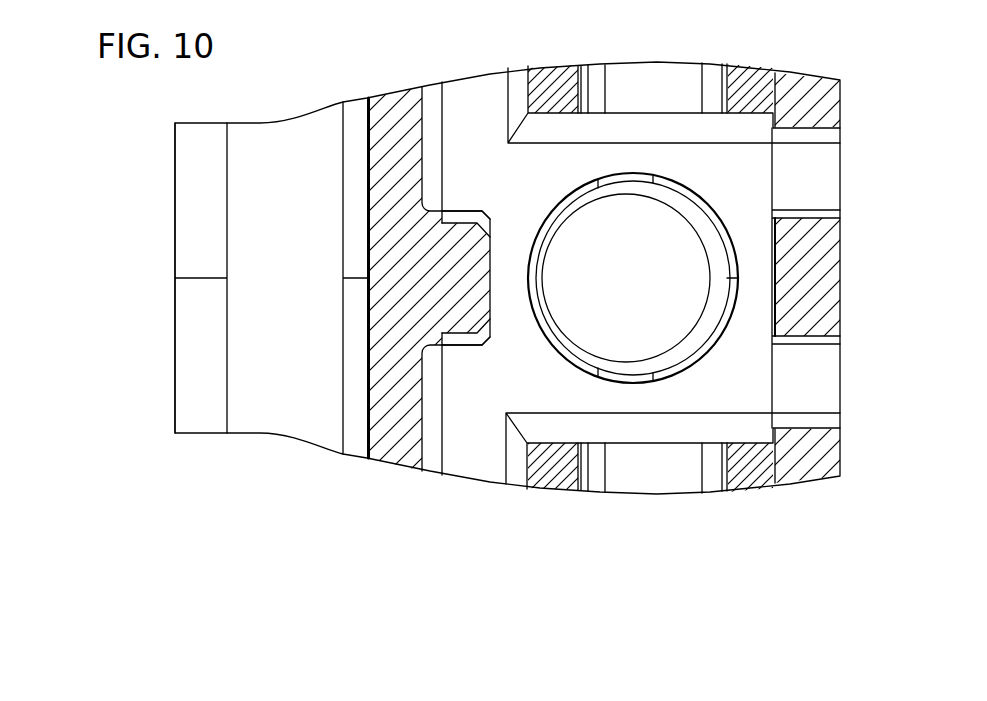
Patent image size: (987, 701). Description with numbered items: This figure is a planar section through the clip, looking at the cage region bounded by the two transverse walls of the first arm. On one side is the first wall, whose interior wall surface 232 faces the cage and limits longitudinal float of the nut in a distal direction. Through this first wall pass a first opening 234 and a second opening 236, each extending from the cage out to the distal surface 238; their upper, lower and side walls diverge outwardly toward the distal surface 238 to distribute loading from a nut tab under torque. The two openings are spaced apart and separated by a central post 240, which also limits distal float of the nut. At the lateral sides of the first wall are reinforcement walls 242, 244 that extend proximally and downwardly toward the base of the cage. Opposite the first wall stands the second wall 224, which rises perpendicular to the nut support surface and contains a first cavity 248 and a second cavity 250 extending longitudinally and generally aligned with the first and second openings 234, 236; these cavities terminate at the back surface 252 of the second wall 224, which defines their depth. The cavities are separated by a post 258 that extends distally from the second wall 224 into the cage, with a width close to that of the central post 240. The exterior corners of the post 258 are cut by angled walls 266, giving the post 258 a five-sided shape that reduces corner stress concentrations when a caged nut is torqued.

The second wall 224 is at (393, 117).
The interior wall surface 232 is at (745, 110).
The first opening 234 is at (858, 376).
The second opening 236 is at (850, 165).
The distal surface 238 is at (843, 238).
The central post 240 is at (820, 272).
The reinforcement wall 242 is at (772, 490).
The reinforcement wall 244 is at (745, 122).
The first cavity 248 is at (460, 392).
The second cavity 250 is at (453, 175).
The back surface 252 is at (423, 118).
The post 258 is at (458, 312).
The angled walls 266 is at (482, 211).